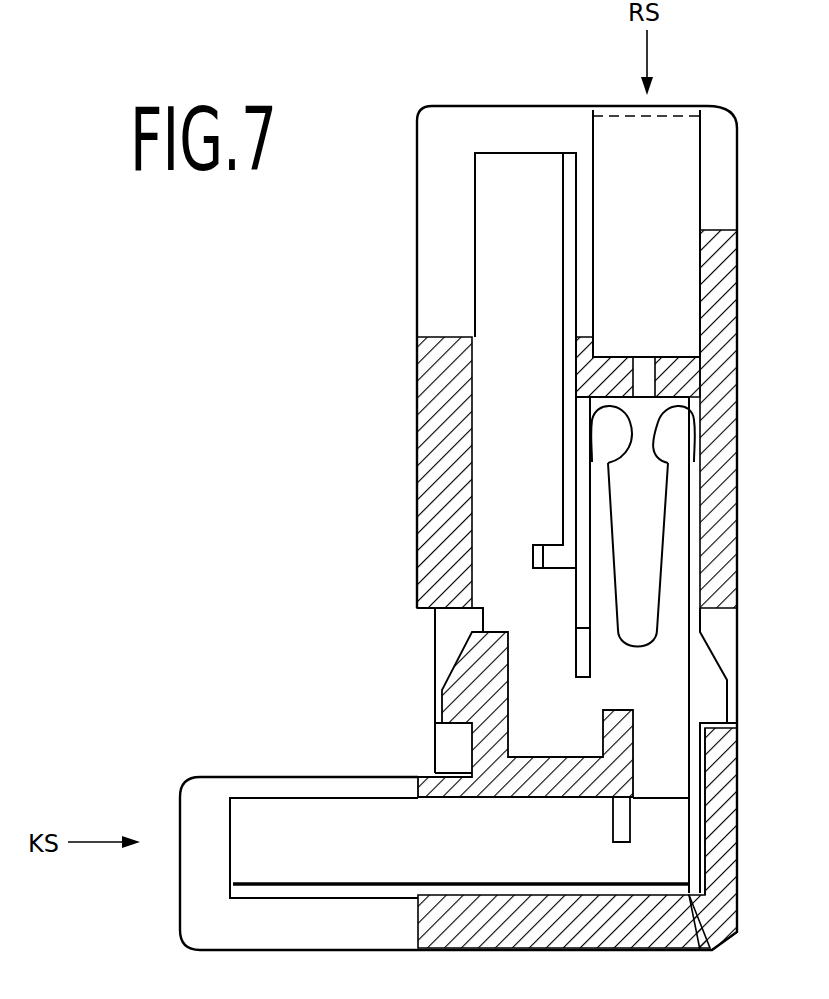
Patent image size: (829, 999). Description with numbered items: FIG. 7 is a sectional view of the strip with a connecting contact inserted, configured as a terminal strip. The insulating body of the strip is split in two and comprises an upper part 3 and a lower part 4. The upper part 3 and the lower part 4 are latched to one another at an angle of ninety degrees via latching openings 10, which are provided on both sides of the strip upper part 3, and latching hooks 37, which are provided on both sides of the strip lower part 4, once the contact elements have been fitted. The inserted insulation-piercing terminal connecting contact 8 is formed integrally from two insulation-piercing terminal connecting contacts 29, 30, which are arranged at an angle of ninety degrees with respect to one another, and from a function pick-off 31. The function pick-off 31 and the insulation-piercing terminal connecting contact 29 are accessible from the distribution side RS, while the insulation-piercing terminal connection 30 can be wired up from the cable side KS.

The upper part 3 is at (447, 509).
The lower part 4 is at (722, 826).
The insulation-piercing terminal connecting contact 8 is at (619, 554).
The latching openings 10 is at (455, 642).
The insulation-piercing terminal connecting contact 29 is at (500, 222).
The insulation-piercing terminal connection 30 is at (315, 820).
The function pick-off 31 is at (678, 433).
The latching hooks 37 is at (462, 676).